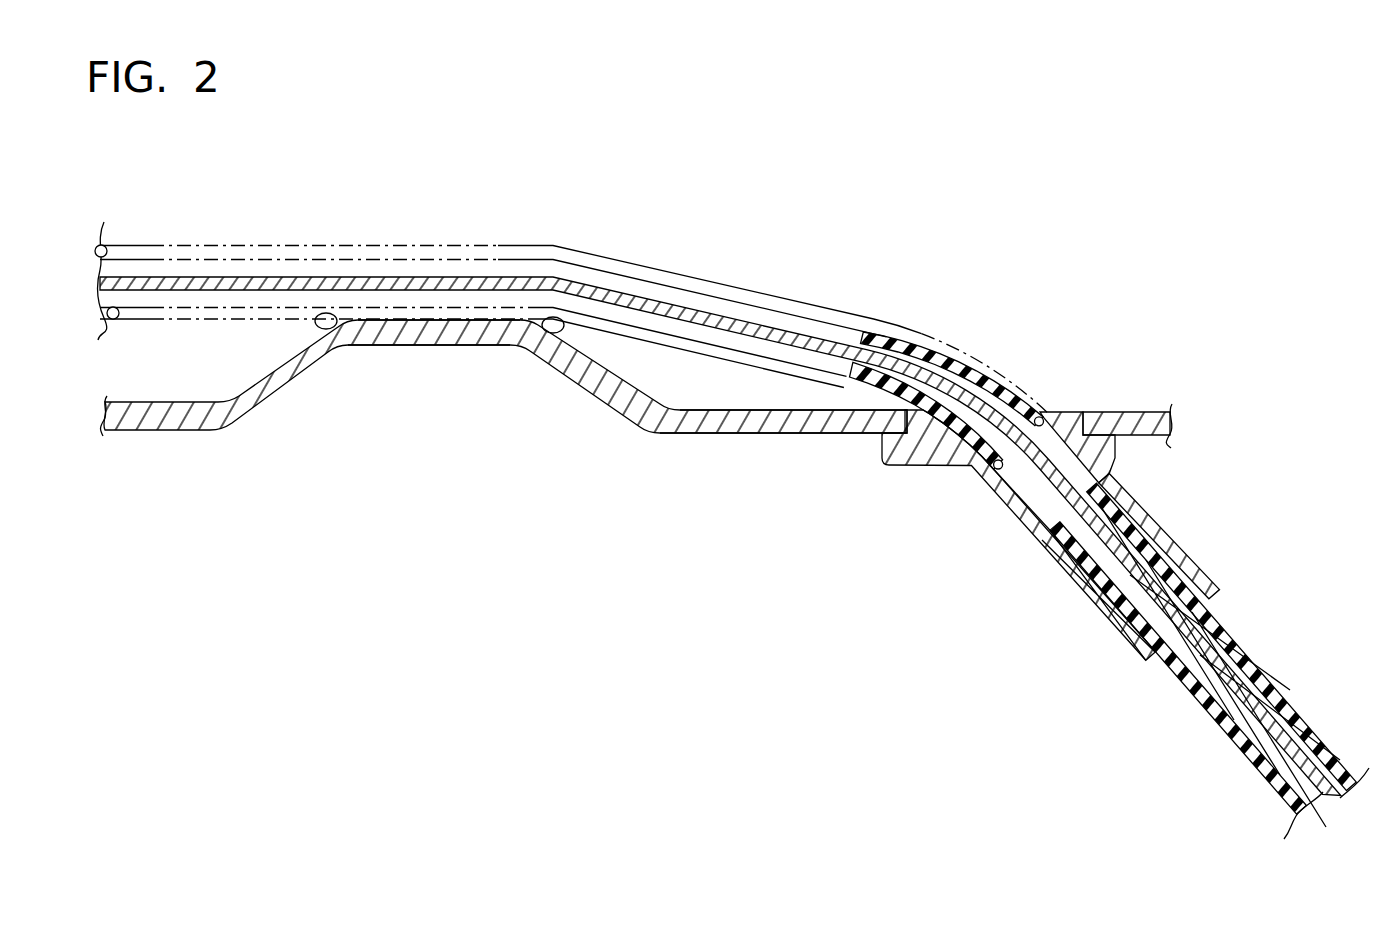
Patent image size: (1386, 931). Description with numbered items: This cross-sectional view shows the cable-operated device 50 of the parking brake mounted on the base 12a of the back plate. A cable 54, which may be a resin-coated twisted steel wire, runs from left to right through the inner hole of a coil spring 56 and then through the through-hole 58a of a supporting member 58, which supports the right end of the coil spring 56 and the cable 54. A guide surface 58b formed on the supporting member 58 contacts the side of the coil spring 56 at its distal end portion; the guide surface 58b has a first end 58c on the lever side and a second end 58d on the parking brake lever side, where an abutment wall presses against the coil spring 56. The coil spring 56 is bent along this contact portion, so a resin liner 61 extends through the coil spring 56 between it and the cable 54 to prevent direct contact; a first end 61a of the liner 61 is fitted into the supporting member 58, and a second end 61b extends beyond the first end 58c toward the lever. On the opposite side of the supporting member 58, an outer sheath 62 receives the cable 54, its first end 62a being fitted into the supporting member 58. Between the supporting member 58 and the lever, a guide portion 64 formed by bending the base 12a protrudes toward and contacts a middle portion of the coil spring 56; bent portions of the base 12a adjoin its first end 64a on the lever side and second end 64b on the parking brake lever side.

The base 12a is at (178, 418).
The cable-operated device 50 is at (978, 184).
The cable 54 is at (1218, 663).
The coil spring 56 is at (561, 236).
The supporting member 58 is at (1027, 491).
The through-hole 58a is at (1062, 545).
The guide surface 58b is at (950, 467).
The first end 58c is at (885, 413).
The second end 58d is at (1001, 500).
The liner 61 is at (959, 351).
The first end 61a is at (1042, 417).
The second end 61b is at (862, 330).
The outer sheath 62 is at (1250, 745).
The first end 62a is at (1118, 462).
The guide portion 64 is at (452, 336).
The first end 64a is at (326, 329).
The second end 64b is at (553, 333).